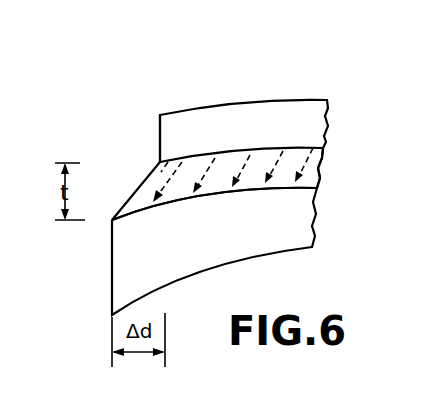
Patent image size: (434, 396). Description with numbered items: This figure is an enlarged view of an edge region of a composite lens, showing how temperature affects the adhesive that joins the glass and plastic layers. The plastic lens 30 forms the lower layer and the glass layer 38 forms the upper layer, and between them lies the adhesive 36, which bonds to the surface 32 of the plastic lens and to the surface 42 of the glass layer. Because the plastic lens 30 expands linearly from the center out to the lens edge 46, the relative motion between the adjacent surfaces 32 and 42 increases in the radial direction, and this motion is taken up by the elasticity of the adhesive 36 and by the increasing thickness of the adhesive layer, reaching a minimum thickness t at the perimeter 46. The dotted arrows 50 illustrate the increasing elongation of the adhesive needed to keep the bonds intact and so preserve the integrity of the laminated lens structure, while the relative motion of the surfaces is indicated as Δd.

The plastic lens 30 is at (120, 280).
The surface 32 is at (210, 194).
The adhesive 36 is at (313, 165).
The glass layer 38 is at (200, 116).
The surface 42 is at (237, 158).
The lens edge 46 is at (160, 140).
The dotted arrows 50 is at (206, 175).